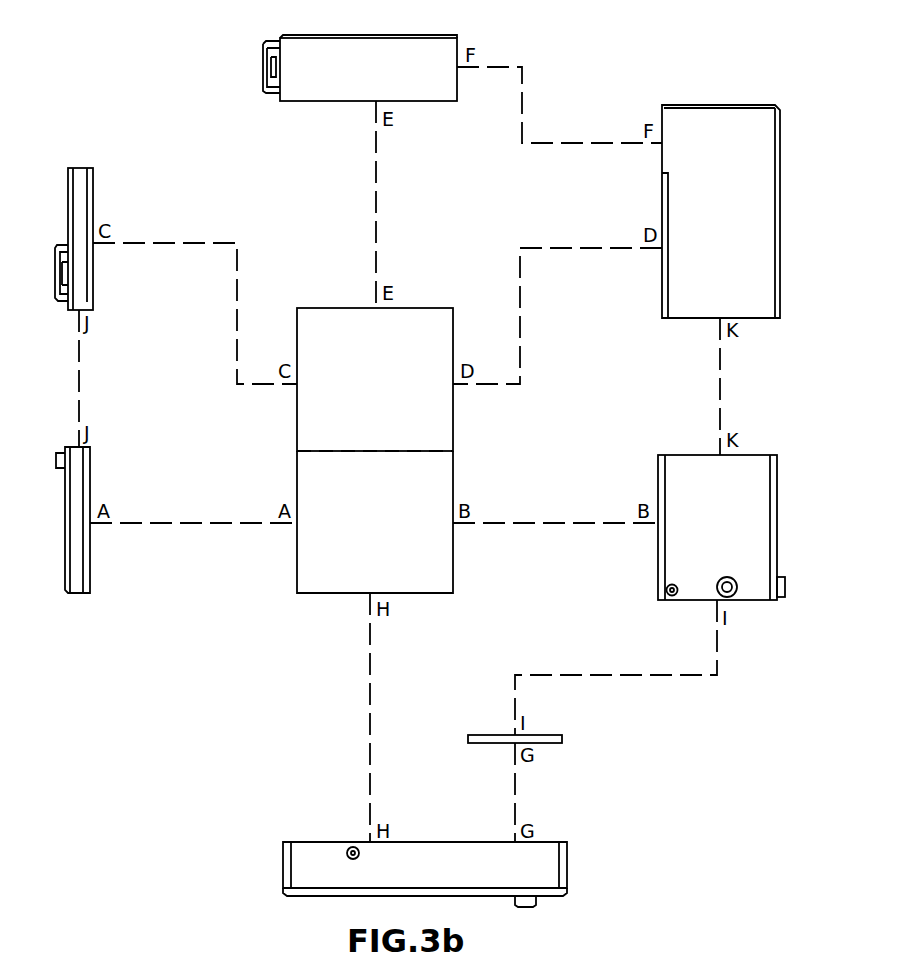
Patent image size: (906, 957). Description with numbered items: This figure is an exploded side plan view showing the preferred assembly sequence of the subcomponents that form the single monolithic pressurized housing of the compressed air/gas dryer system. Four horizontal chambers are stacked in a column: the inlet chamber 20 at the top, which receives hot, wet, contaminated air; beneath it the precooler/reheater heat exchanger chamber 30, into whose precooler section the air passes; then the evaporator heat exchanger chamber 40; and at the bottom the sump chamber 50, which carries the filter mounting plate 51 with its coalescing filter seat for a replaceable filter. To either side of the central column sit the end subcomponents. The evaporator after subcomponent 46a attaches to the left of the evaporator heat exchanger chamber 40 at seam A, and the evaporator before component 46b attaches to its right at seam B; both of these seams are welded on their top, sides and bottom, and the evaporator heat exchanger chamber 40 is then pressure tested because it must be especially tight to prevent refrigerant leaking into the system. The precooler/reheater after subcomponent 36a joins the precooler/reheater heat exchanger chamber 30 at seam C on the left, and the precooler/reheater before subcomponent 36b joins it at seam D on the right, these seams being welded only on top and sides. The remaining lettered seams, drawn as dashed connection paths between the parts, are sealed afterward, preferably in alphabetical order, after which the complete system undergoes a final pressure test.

The inlet chamber 20 is at (357, 82).
The precooler/reheater heat exchanger chamber 30 is at (364, 396).
The evaporator heat exchanger chamber 40 is at (364, 536).
The precooler/reheater after subcomponent 36a is at (82, 168).
The precooler/reheater before subcomponent 36b is at (711, 222).
The evaporator after subcomponent 46a is at (78, 593).
The evaporator before component 46b is at (708, 536).
The sump chamber 50 is at (417, 876).
The filter mounting plate 51 is at (562, 740).